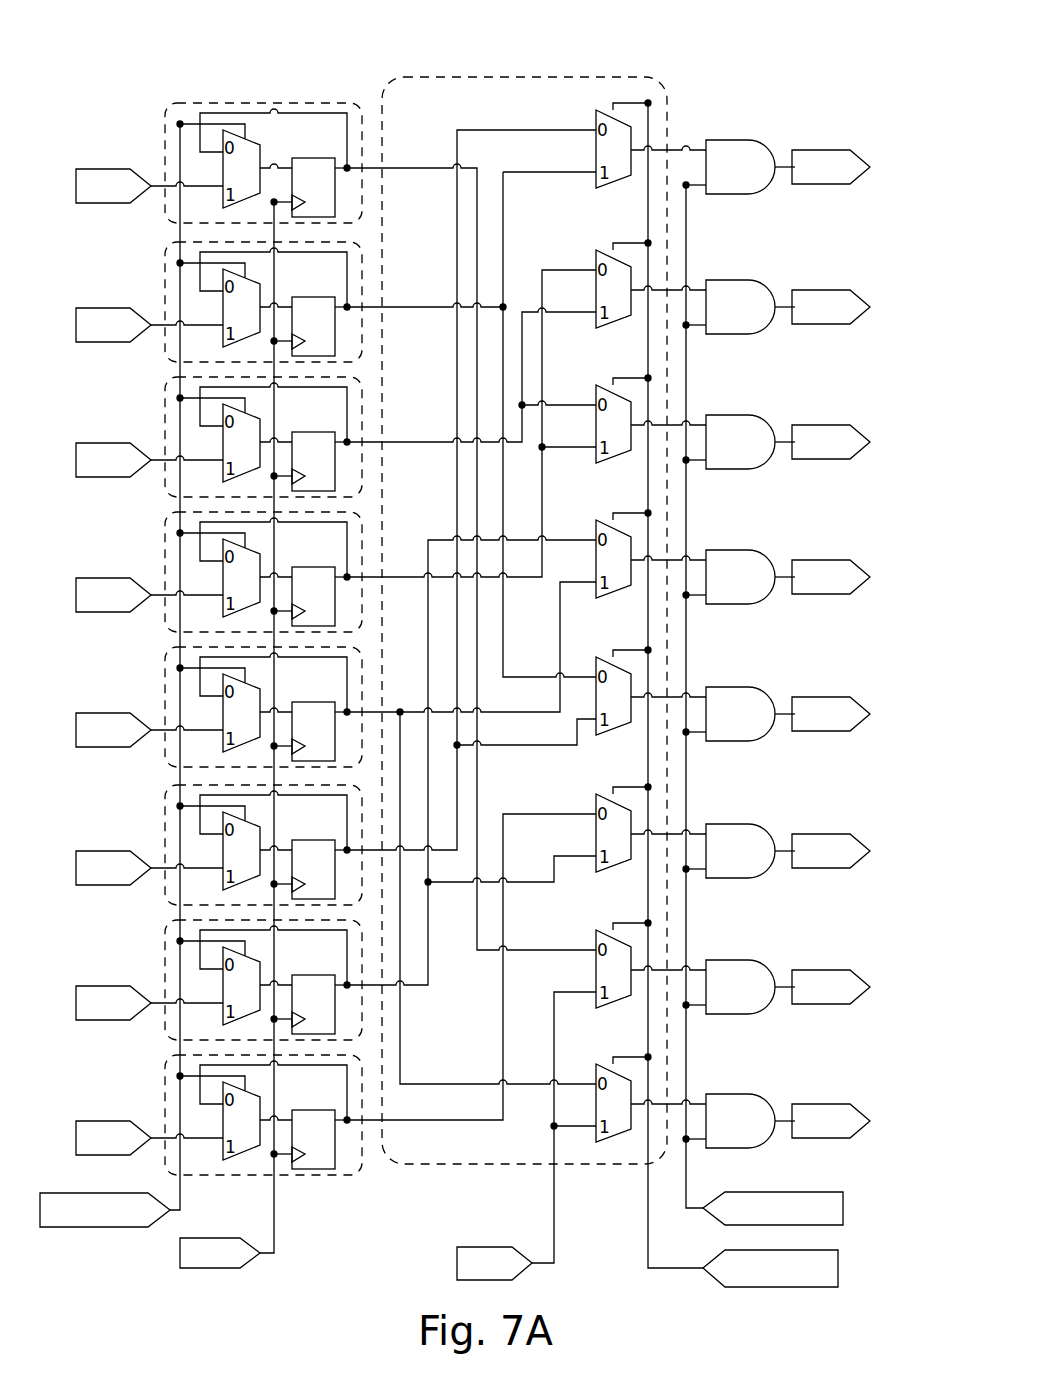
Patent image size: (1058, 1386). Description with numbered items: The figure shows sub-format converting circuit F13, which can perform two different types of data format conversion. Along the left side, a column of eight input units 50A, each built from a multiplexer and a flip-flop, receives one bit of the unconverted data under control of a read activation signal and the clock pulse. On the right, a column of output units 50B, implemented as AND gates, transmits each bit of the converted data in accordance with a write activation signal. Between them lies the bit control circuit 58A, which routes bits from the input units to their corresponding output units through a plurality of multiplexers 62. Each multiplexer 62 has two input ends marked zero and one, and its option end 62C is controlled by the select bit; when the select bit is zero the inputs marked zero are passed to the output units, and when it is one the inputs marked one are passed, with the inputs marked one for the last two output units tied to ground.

The input units 50A is at (262, 103).
The output units 50B is at (742, 138).
The bit control circuit 58A is at (480, 77).
The multiplexer 62 is at (618, 178).
The option end 62C is at (603, 98).
The sub-format converting circuit F13 is at (680, 60).